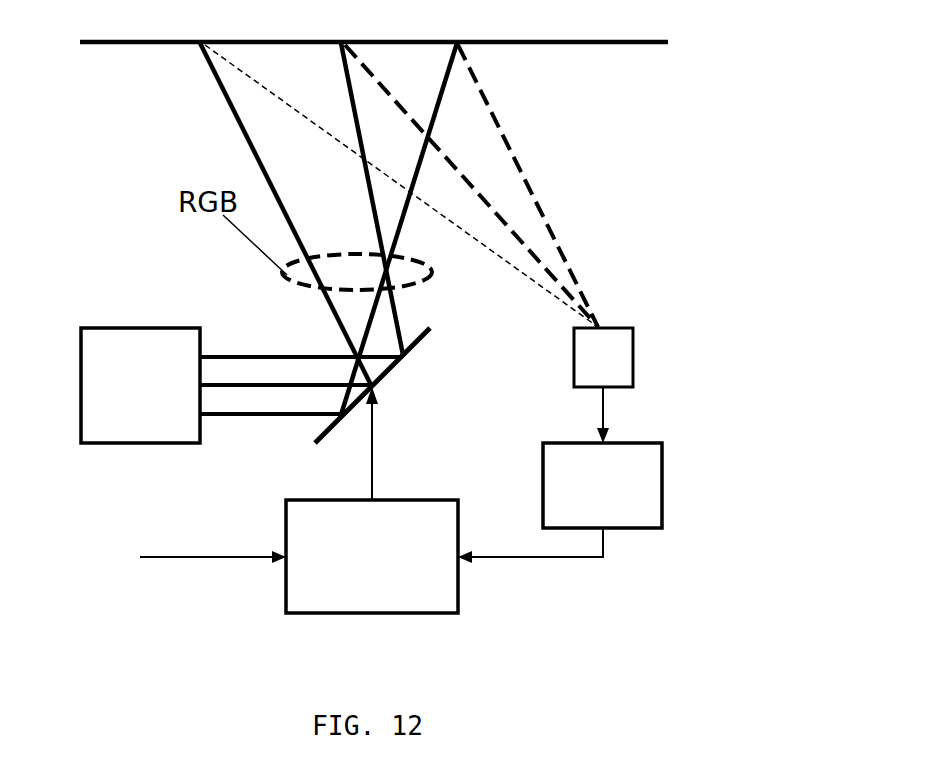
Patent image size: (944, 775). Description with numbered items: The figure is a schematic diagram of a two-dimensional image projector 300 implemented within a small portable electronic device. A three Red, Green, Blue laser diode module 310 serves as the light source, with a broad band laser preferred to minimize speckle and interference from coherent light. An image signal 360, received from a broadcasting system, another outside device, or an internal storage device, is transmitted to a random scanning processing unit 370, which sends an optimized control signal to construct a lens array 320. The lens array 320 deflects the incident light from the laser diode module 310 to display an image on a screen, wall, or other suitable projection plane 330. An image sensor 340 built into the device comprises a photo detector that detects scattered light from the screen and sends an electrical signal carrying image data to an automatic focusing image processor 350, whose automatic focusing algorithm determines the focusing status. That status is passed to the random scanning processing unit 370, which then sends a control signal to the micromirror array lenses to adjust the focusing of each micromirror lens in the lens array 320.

The image display apparatus 300 is at (673, 170).
The three laser diode module 310 is at (140, 328).
The lens array 320 is at (403, 360).
The projection plane 330 is at (574, 43).
The image sensor 340 is at (574, 357).
The automatic focusing image processor 350 is at (662, 528).
The image signal 360 is at (198, 553).
The random scanning processing unit 370 is at (430, 498).